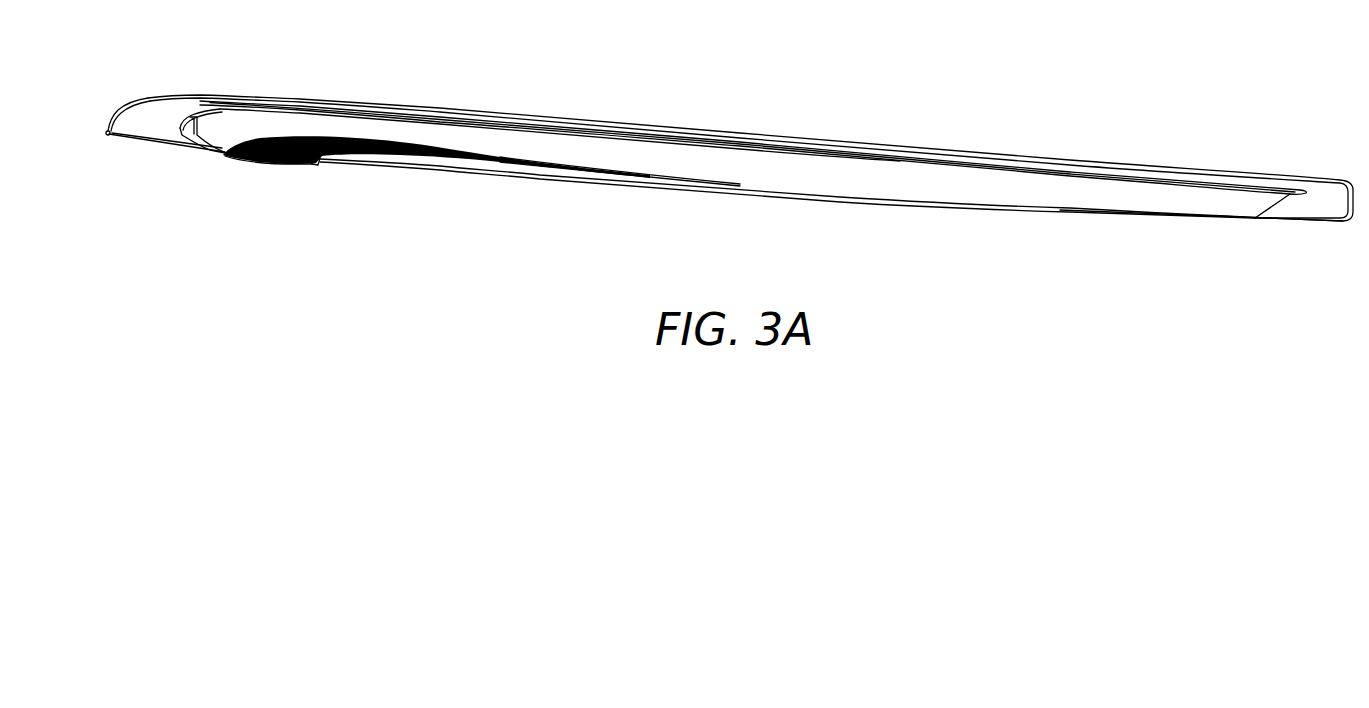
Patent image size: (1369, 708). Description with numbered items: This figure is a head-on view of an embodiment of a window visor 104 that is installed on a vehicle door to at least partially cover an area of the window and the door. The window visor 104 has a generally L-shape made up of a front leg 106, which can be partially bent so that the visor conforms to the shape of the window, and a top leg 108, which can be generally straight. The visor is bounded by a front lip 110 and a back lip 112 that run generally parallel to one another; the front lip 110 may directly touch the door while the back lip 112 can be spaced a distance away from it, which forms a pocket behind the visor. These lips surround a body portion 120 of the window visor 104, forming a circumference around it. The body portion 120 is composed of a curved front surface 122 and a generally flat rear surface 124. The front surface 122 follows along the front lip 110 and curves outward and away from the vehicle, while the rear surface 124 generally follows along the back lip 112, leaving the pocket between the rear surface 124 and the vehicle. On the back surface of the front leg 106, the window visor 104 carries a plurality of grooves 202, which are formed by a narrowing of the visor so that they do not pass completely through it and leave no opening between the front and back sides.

The window visor 104 is at (282, 123).
The front leg 106 is at (227, 128).
The top leg 108 is at (872, 173).
The front lip 110 is at (190, 130).
The back lip 112 is at (314, 164).
The body portion 120 is at (397, 140).
The front surface 122 is at (210, 138).
The rear surface 124 is at (268, 168).
The grooves 202 is at (248, 165).